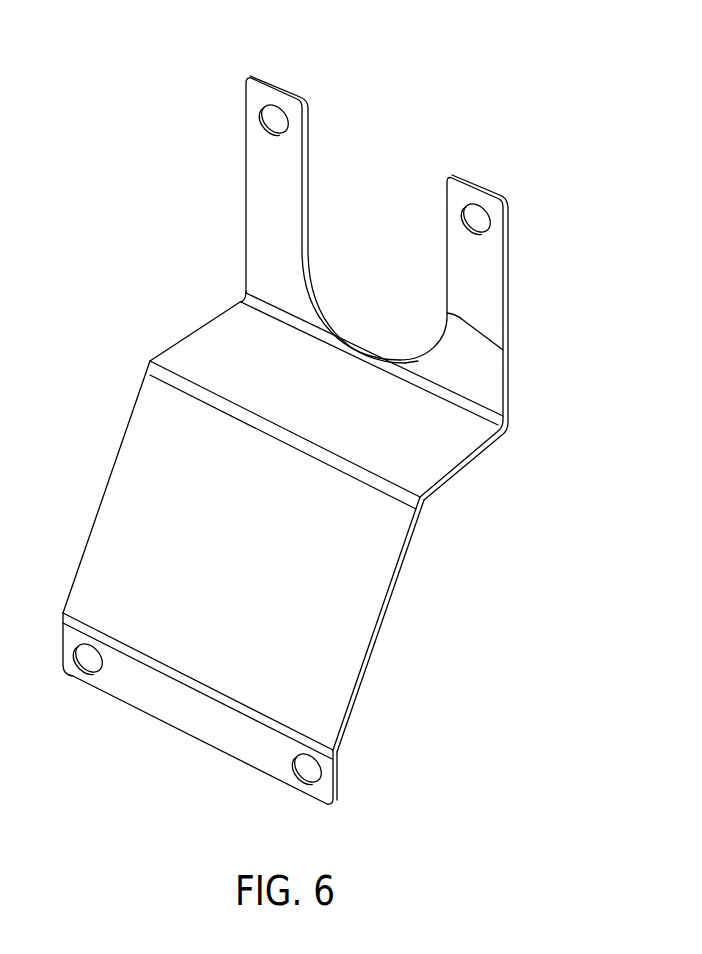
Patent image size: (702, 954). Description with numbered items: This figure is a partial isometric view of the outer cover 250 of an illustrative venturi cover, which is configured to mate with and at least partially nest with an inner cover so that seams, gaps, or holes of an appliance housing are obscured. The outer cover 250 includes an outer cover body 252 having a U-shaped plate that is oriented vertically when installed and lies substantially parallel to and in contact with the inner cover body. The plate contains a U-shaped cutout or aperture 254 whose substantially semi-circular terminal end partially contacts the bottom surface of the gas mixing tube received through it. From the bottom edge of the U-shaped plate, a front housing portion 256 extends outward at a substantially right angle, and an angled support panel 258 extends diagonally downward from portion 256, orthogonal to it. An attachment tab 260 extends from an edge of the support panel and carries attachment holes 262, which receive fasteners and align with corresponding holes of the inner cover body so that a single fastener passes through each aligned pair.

The outer cover 250 is at (482, 100).
The outer cover body 252 is at (492, 285).
The U-shaped aperture 254 is at (503, 350).
The front housing portion 256 is at (450, 458).
The angled support panel 258 is at (357, 625).
The attachment tab 260 is at (272, 757).
The attachment hole 262 is at (484, 205).